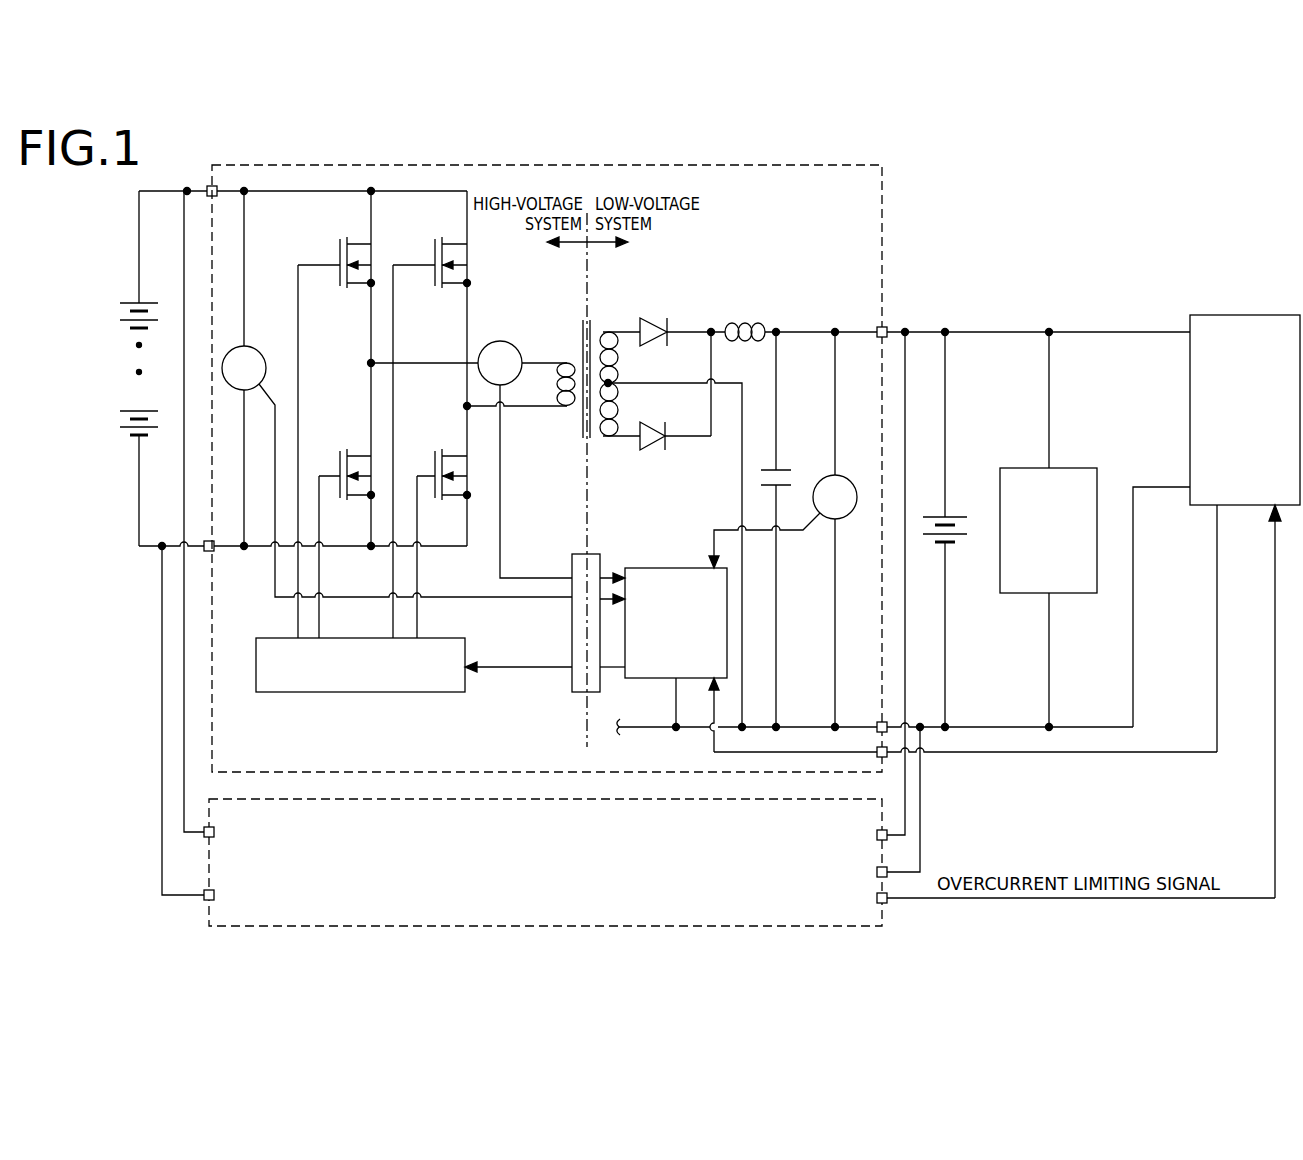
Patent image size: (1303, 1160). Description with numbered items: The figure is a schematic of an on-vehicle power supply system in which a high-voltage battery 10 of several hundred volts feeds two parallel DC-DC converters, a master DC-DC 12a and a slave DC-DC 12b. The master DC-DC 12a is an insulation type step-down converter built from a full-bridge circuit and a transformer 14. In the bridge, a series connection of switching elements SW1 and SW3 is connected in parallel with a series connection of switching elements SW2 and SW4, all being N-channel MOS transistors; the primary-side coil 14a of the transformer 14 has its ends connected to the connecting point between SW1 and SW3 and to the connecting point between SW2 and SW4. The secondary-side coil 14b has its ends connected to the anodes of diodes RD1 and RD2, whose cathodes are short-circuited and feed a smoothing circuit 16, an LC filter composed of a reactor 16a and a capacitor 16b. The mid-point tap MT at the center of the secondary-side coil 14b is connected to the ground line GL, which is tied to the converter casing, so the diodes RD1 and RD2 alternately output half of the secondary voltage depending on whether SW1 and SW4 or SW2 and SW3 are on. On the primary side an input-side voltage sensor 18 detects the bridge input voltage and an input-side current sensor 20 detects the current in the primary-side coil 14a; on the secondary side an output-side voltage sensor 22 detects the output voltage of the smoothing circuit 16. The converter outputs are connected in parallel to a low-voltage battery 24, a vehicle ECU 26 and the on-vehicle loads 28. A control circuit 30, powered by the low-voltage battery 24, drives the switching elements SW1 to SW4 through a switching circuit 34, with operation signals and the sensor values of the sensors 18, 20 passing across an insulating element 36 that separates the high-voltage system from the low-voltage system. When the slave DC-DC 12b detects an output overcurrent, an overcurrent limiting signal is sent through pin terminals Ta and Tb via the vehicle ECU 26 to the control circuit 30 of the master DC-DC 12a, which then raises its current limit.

The high-voltage battery 10 is at (141, 302).
The master DC-DC converter 12a is at (871, 165).
The slave DC-DC converter 12b is at (871, 927).
The transformer 14 is at (553, 391).
The primary-side coil 14a is at (567, 362).
The secondary-side coil 14b is at (607, 330).
The smoothing circuit 16 is at (801, 490).
The reactor 16a is at (752, 324).
The capacitor 16b is at (788, 469).
The input-side voltage sensor 18 is at (253, 347).
The input-side current sensor 20 is at (513, 341).
The output-side voltage sensor 22 is at (840, 476).
The low-voltage battery 24 is at (948, 516).
The vehicle ECU 26 is at (1245, 315).
The on-vehicle loads 28 is at (1085, 467).
The control circuit 30 is at (692, 567).
The switching circuit 34 is at (442, 638).
The insulating element 36 is at (596, 554).
The switching element SW1 is at (340, 246).
The switching element SW2 is at (435, 246).
The switching element SW3 is at (338, 457).
The switching element SW4 is at (433, 457).
The diode RD1 is at (658, 318).
The diode RD2 is at (652, 424).
The mid-point tap MT is at (615, 383).
The ground line GL is at (872, 722).
The pin terminal Ta is at (885, 757).
The pin terminal Tb is at (887, 902).